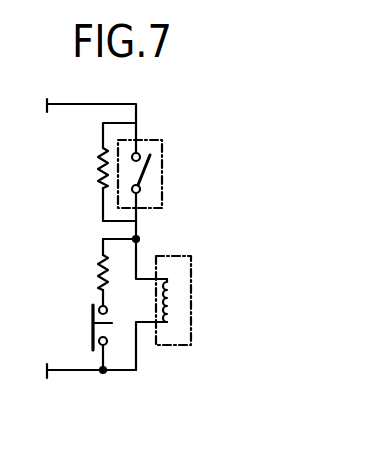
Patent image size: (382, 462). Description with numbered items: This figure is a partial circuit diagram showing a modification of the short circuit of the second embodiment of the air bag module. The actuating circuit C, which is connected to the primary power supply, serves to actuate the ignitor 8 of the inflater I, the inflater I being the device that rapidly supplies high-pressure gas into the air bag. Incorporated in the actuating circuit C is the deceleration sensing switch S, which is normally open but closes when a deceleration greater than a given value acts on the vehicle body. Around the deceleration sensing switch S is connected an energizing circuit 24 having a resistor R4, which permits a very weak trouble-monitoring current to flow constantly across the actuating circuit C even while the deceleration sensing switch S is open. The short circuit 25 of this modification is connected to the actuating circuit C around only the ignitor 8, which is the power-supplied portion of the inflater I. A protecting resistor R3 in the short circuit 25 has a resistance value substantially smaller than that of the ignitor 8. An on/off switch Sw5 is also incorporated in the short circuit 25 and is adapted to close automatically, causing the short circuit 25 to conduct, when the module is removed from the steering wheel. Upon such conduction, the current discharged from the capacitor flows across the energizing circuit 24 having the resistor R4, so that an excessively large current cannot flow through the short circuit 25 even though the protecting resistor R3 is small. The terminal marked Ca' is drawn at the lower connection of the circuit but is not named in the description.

The actuating circuit C is at (62, 110).
The resistor R4 is at (100, 175).
The deceleration sensing switch S is at (162, 152).
The energizing circuit 24 is at (103, 208).
The short circuit 25 is at (103, 239).
The protecting resistor R3 is at (99, 274).
The ignitor 8 is at (171, 292).
The inflater I is at (191, 326).
The on/off switch Sw5 is at (92, 332).
The camera accessory connection Ca' is at (74, 384).